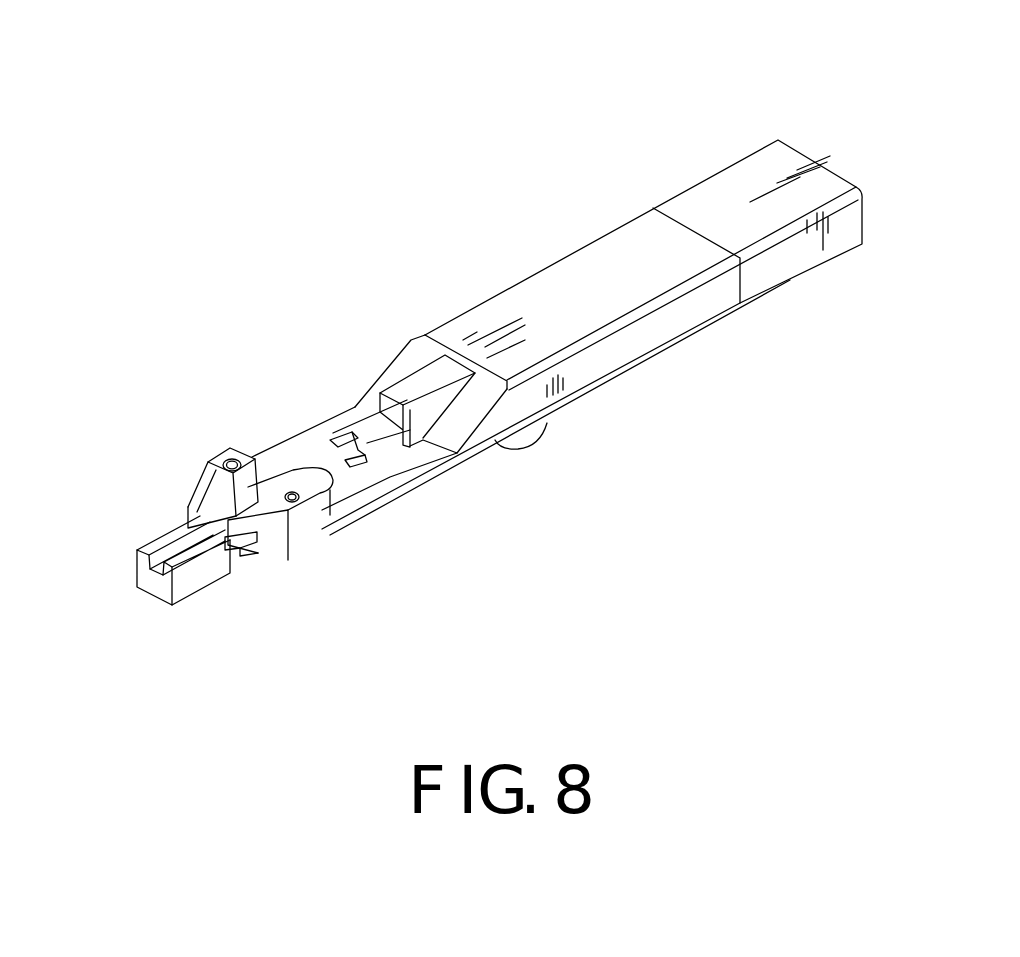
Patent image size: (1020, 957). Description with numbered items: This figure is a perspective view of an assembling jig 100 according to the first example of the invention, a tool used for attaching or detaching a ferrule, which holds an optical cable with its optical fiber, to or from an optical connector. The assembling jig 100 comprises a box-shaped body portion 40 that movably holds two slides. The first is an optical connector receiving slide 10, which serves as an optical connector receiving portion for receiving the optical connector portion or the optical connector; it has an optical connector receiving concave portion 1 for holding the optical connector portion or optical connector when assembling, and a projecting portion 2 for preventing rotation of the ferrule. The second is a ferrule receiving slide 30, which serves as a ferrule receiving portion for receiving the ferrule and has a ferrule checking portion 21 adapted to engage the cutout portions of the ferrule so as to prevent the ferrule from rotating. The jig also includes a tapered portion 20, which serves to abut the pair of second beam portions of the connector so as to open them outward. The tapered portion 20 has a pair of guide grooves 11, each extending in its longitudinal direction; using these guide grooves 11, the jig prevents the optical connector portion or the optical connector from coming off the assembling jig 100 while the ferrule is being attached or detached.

The assembling jig 100 is at (632, 190).
The body portion 40 is at (697, 302).
The ferrule receiving slide 30 is at (403, 390).
The optical connector receiving concave portion 1 is at (193, 558).
The ferrule checking portion 21 is at (365, 460).
The projecting portion 2 is at (333, 492).
The guide grooves 11 is at (257, 542).
The tapered portion 20 is at (268, 523).
The optical connector receiving slide 10 is at (153, 584).